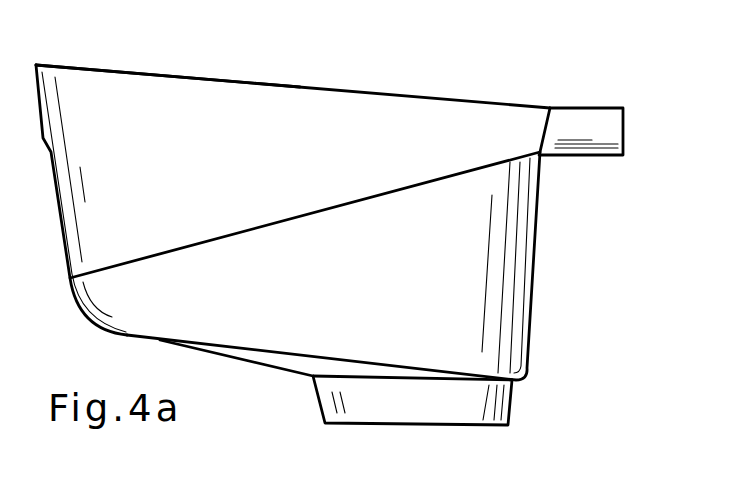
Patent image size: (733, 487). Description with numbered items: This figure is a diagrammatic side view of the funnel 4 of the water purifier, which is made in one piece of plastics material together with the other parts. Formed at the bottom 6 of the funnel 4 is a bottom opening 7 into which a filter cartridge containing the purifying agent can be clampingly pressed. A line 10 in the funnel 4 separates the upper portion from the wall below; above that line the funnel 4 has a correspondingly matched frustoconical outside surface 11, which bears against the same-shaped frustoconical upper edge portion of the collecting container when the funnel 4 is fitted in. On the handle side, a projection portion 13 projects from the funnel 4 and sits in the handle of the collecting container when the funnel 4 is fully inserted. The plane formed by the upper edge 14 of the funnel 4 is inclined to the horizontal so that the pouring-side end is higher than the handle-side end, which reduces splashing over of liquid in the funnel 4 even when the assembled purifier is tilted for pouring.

The funnel 4 is at (54, 210).
The bottom 6 is at (300, 362).
The bottom opening 7 is at (493, 405).
The line 10 is at (498, 165).
The frustoconical outside surface 11 is at (206, 168).
The projection portion 13 is at (586, 120).
The upper edge 14 is at (67, 65).